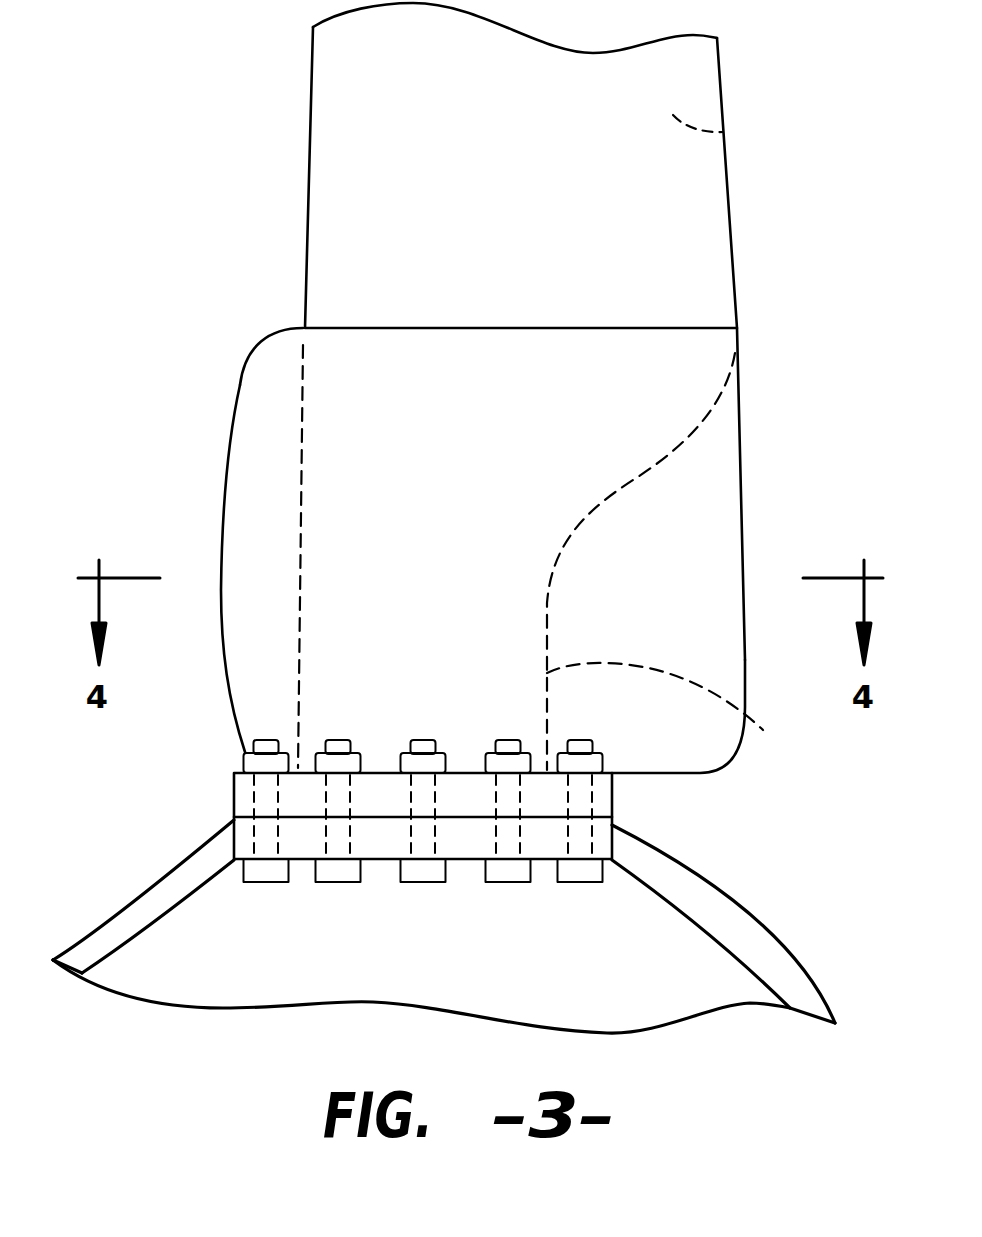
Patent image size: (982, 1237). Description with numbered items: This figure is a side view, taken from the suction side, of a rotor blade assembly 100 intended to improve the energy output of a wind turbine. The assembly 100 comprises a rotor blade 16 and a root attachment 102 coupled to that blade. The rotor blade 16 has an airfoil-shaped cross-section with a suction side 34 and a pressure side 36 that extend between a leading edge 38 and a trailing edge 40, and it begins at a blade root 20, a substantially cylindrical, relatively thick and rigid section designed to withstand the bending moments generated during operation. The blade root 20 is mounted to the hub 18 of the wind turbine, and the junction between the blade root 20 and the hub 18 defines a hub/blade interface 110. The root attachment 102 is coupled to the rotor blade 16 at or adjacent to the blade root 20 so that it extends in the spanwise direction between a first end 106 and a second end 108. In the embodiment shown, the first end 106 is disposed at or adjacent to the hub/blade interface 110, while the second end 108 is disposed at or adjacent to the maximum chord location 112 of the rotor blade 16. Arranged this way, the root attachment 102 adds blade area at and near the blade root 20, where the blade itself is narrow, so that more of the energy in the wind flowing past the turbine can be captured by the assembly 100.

The rotor blade assembly 100 is at (160, 187).
The rotor blade 16 is at (521, 195).
The hub 18 is at (766, 920).
The blade root 20 is at (674, 717).
The suction side 34 is at (338, 124).
The pressure side 36 is at (727, 130).
The leading edge 38 is at (307, 213).
The trailing edge 40 is at (732, 212).
The root attachment 102 is at (212, 469).
The first end 106 is at (663, 775).
The second end 108 is at (333, 325).
The hub/blade interface 110 is at (248, 815).
The maximum chord location 112 is at (742, 342).